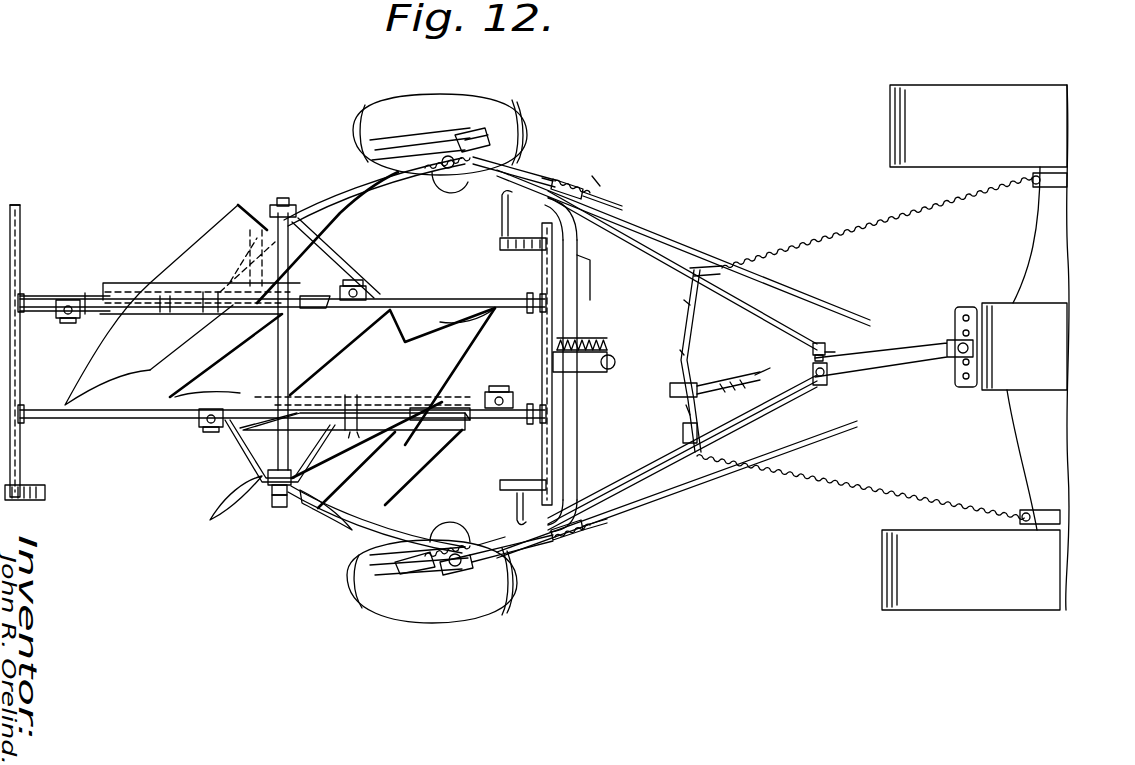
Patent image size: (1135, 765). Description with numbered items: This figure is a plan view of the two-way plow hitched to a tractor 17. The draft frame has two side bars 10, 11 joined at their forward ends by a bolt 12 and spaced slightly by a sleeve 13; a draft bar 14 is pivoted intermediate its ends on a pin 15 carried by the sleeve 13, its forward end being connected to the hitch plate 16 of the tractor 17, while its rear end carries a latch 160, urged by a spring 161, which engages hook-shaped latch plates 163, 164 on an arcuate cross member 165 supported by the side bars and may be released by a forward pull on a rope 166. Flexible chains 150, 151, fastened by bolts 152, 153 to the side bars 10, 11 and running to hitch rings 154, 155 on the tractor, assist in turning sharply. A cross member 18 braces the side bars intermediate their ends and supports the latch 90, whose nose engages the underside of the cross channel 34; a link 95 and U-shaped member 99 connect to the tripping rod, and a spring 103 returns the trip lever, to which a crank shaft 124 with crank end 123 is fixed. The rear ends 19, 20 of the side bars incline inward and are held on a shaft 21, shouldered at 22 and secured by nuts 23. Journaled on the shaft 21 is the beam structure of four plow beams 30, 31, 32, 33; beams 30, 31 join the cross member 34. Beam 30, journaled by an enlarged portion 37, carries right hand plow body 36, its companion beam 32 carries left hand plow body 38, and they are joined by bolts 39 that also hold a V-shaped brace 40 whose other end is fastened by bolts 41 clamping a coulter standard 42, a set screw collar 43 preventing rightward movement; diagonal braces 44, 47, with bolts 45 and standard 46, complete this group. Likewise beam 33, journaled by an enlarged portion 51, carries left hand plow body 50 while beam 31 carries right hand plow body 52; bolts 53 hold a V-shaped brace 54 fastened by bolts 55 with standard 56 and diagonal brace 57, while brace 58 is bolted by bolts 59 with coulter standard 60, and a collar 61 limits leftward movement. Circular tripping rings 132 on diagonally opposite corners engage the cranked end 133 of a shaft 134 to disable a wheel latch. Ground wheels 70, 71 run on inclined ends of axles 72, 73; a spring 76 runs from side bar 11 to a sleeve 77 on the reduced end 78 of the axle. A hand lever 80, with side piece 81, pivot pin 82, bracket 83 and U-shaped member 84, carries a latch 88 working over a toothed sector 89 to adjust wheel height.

The side bar 10 is at (633, 244).
The side bar 11 is at (688, 477).
The bolt 12 is at (823, 344).
The sleeve 13 is at (832, 355).
The draft bar 14 is at (900, 362).
The pin 15 is at (828, 376).
The hitch plate 16 is at (955, 320).
The tractor 17 is at (1028, 272).
The cross member 18 is at (578, 408).
The inclined rear end 19 is at (360, 185).
The inclined rear end 20 is at (345, 545).
The shaft 21 is at (278, 352).
The shoulder 22 is at (250, 505).
The nuts 23 is at (281, 204).
The plow beam 30 is at (450, 298).
The plow beam 31 is at (470, 425).
The plow beam 32 is at (92, 296).
The plow beam 33 is at (132, 420).
The cross member 34 is at (542, 341).
The right hand plow body 36 is at (190, 355).
The enlarged portion 37 is at (312, 308).
The left hand plow body 38 is at (228, 226).
The bolts 39 is at (200, 318).
The V-shaped brace 40 is at (335, 260).
The bolts 41 is at (360, 284).
The standard 42 is at (368, 290).
The set screw collar 43 is at (250, 250).
The diagonal brace 44 is at (70, 296).
The bolts 45 is at (62, 320).
The standard 46 is at (76, 324).
The diagonal brace 47 is at (395, 335).
The left hand plow body 50 is at (420, 350).
The enlarged portion 51 is at (262, 430).
The right hand plow body 52 is at (390, 448).
The bolts 53 is at (352, 432).
The V-shaped brace 54 is at (340, 457).
The bolts 55 is at (216, 433).
The standard 56 is at (203, 428).
The diagonal brace 57 is at (175, 397).
The brace 58 is at (452, 405).
The bolts 59 is at (496, 392).
The rolling coulter standard 60 is at (508, 392).
The collar 61 is at (265, 412).
The ground wheel 70 is at (445, 100).
The ground wheel 71 is at (450, 615).
The axle 72 is at (455, 188).
The axle 73 is at (448, 522).
The spring 76 is at (400, 150).
The sleeve 77 is at (475, 170).
The reduced end 78 is at (478, 140).
The hand lever 80 is at (683, 246).
The side piece 81 is at (525, 567).
The pivot pin 82 is at (445, 577).
The bracket 83 is at (420, 578).
The U-shaped member 84 is at (405, 578).
The latch 88 is at (562, 185).
The toothed sector 89 is at (515, 165).
The latch 90 is at (580, 372).
The link 95 is at (608, 355).
The U-shaped member 99 is at (612, 369).
The spring 103 is at (598, 345).
The crank end 123 is at (598, 203).
The crank shaft 124 is at (578, 332).
The tripping ring 132 is at (45, 493).
The cranked end 133 is at (500, 243).
The shaft 134 is at (503, 215).
The flexible chain 150 is at (828, 245).
The flexible chain 151 is at (830, 495).
The bolt 152 is at (690, 305).
The bolt 153 is at (698, 430).
The hitch ring 154 is at (1033, 188).
The hitch ring 155 is at (1060, 517).
The latch 160 is at (698, 385).
The spring 161 is at (670, 388).
The hook-shaped latch plate 163 is at (682, 410).
The hook-shaped latch plate 164 is at (680, 350).
The arcuate cross member 165 is at (686, 305).
The rope 166 is at (740, 370).